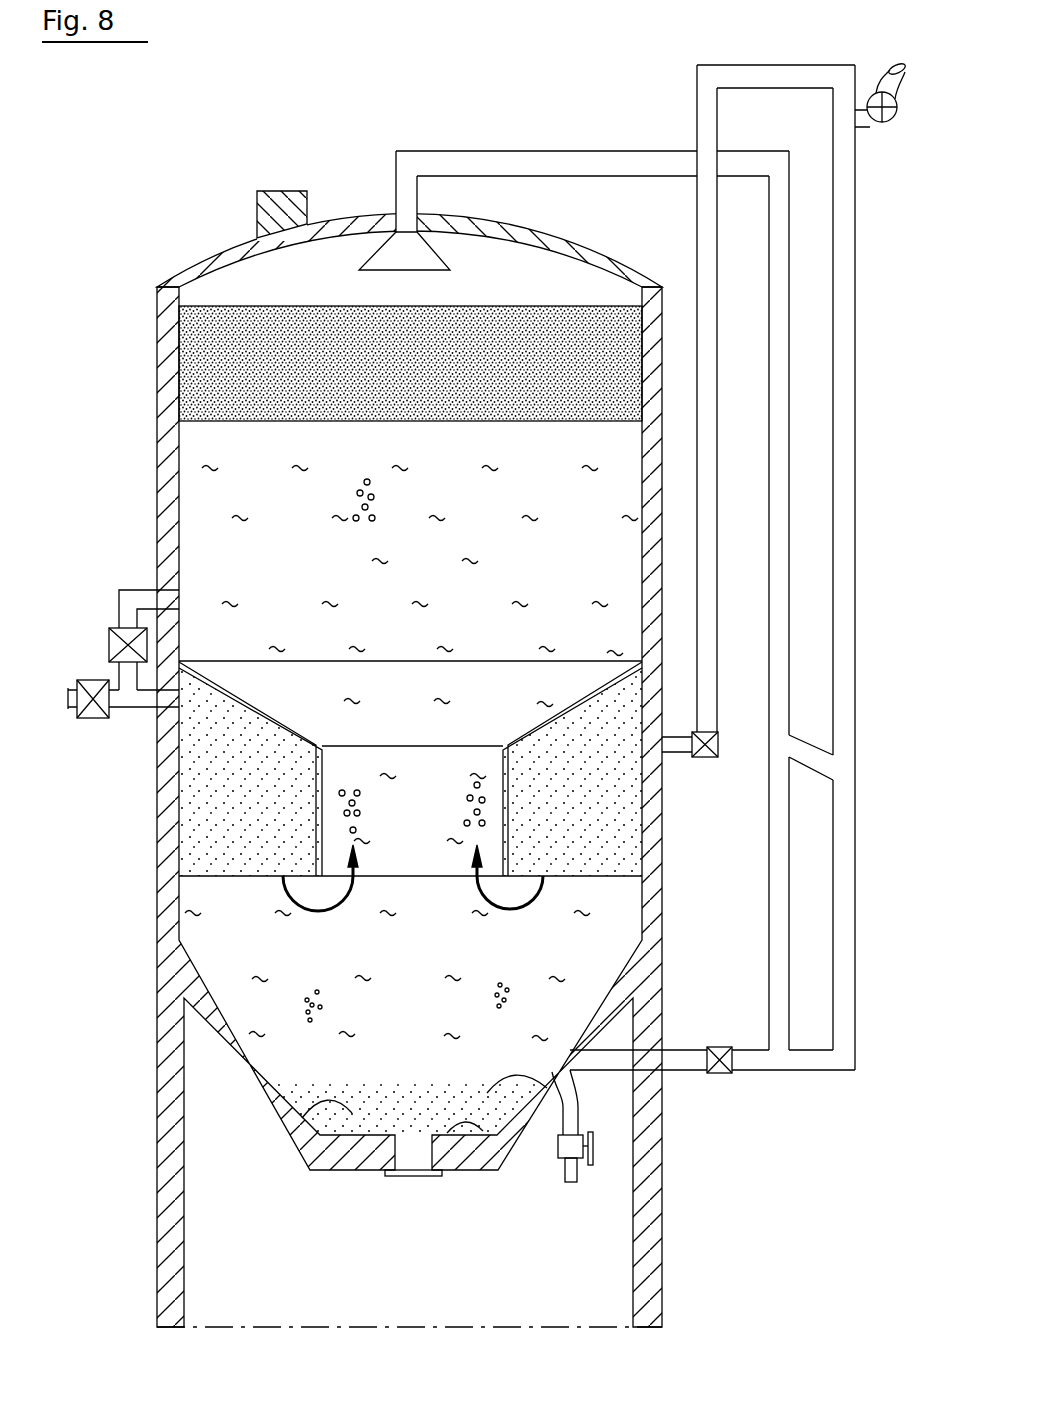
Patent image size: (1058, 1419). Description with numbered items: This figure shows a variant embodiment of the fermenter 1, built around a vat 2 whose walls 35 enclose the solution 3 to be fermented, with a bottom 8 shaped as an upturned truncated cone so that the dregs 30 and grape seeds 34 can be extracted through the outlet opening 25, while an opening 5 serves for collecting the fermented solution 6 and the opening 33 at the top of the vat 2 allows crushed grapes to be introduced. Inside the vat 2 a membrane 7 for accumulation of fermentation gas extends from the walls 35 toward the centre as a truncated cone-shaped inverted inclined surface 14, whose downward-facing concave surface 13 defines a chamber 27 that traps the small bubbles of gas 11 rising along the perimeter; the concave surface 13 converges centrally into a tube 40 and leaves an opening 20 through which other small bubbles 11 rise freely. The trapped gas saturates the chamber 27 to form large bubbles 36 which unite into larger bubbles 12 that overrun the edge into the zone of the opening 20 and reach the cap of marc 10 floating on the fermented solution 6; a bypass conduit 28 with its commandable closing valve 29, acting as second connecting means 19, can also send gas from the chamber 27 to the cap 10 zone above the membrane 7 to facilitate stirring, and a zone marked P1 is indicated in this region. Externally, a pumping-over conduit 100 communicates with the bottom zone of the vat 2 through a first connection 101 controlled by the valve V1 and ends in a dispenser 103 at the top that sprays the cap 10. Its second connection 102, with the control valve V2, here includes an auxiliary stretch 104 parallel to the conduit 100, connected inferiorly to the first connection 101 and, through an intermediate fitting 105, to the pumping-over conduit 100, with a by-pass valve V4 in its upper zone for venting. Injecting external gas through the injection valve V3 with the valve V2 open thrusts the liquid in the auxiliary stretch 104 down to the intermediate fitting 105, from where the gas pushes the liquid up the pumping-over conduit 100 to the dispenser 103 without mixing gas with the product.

The fermenter 1 is at (851, 1280).
The vat 2 is at (175, 986).
The solution to be fermented 3 is at (414, 998).
The opening for collecting the fermented solution 5 is at (553, 1147).
The fermented solution 6 is at (414, 572).
The membrane for accumulation of fermentation gas 7 is at (557, 685).
The bottom 8 is at (443, 1130).
The cap of marc 10 is at (423, 375).
The small bubbles of gas 11 is at (500, 983).
The larger bubbles 12 is at (357, 508).
The concave surface 13 is at (210, 714).
The truncated cone-shaped inverted inclined surface 14 is at (593, 670).
The second connecting means 19 is at (97, 602).
The opening 20 is at (428, 822).
The outlet opening 25 is at (403, 1178).
The chamber 27 is at (616, 712).
The bypass conduit 28 is at (152, 598).
The commandable closing valve 29 is at (109, 647).
The dregs 30 is at (547, 1088).
The opening at the top of the vat 33 is at (292, 190).
The grape seeds 34 is at (297, 1122).
The walls 35 is at (636, 466).
The large bubbles 36 is at (597, 797).
The tube 40 is at (508, 840).
The pumping-over conduit 100 is at (769, 269).
The first connection 101 is at (698, 1088).
The second connection 102 is at (686, 90).
The dispenser 103 is at (420, 253).
The auxiliary stretch 104 is at (875, 760).
The intermediate fitting 105 is at (805, 721).
The control valve V1 is at (728, 1045).
The control valve V2 is at (741, 754).
The control valve V3 is at (88, 744).
The by-pass valve V4 is at (895, 141).
The pressure zone P1 is at (250, 772).